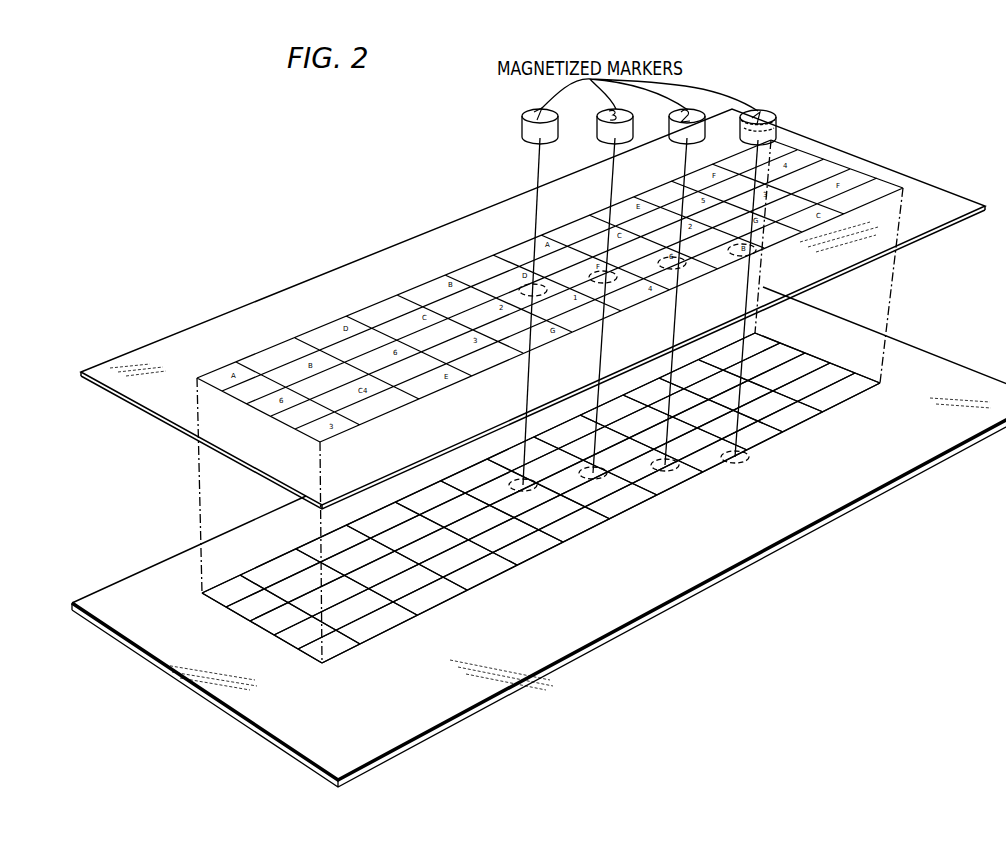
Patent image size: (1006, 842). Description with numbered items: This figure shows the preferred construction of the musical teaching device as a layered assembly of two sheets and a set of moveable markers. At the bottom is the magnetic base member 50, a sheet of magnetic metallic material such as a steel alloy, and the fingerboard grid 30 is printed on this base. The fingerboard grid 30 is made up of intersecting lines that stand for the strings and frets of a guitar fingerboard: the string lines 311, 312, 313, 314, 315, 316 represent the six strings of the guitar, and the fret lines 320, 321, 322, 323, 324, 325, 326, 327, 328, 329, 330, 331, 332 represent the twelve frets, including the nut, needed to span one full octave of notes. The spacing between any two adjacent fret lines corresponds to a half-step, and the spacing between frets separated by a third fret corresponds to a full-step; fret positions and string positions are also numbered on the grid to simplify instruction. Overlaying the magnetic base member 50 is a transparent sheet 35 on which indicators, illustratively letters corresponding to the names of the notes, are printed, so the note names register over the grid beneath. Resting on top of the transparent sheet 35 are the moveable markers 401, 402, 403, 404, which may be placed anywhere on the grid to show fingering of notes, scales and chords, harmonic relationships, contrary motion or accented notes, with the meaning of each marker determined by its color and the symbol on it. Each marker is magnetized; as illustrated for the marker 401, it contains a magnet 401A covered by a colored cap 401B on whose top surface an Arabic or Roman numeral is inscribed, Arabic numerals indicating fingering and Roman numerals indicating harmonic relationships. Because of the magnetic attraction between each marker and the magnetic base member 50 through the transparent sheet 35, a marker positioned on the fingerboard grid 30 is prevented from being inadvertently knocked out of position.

The fingerboard grid 30 is at (248, 612).
The transparent sheet 35 is at (955, 208).
The magnetic base member 50 is at (890, 475).
The string line 311 is at (878, 384).
The string line 312 is at (843, 377).
The string line 313 is at (824, 366).
The string line 314 is at (800, 358).
The string line 315 is at (779, 348).
The string line 316 is at (757, 337).
The fret line 320 is at (864, 387).
The fret line 321 is at (823, 413).
The fret line 322 is at (783, 433).
The fret line 323 is at (746, 452).
The fret line 324 is at (703, 473).
The fret line 325 is at (657, 496).
The fret line 326 is at (610, 520).
The fret line 327 is at (563, 543).
The fret line 328 is at (517, 566).
The fret line 329 is at (467, 591).
The fret line 330 is at (417, 616).
The fret line 331 is at (360, 645).
The fret line 332 is at (308, 664).
The moveable marker 401 is at (768, 112).
The magnet 401A is at (775, 130).
The colored cap 401B is at (776, 118).
The moveable marker 402 is at (684, 138).
The moveable marker 403 is at (607, 137).
The moveable marker 404 is at (535, 137).